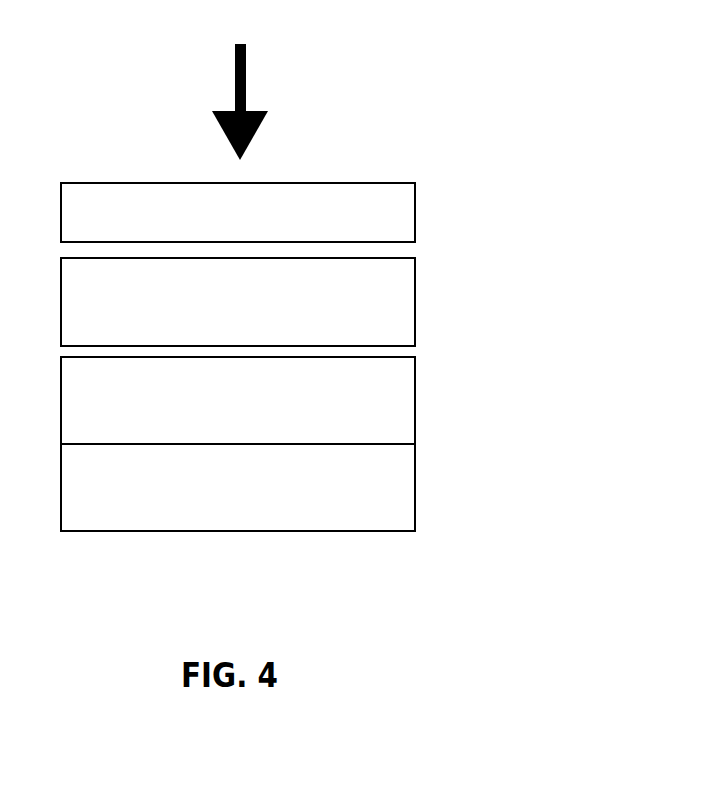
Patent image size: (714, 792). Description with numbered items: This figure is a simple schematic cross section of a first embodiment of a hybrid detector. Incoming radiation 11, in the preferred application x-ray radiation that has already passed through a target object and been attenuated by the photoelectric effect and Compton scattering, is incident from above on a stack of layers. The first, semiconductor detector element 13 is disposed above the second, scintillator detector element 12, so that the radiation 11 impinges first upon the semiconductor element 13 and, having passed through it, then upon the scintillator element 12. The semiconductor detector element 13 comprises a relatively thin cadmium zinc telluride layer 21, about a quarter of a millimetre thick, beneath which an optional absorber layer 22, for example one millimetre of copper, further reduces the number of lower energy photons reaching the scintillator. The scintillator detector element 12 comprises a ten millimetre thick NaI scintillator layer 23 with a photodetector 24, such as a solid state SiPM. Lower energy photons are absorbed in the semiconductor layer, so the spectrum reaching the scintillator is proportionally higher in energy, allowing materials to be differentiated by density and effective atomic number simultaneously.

The incoming radiation 11 is at (341, 100).
The scintillator detector element 12 is at (314, 435).
The semiconductor detector element 13 is at (314, 238).
The cadmium zinc telluride layer 21 is at (255, 229).
The absorber layer 22 is at (255, 323).
The NaI scintillator layer 23 is at (255, 417).
The photodetector 24 is at (255, 507).